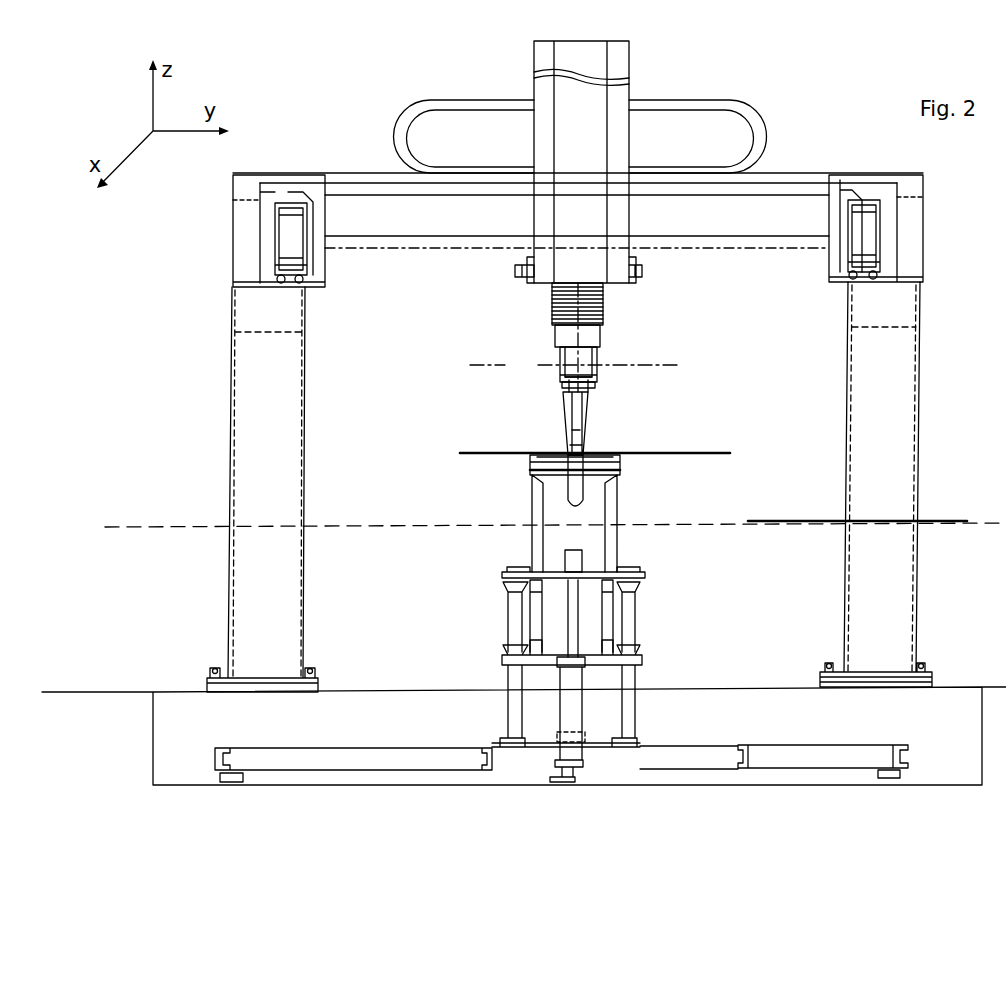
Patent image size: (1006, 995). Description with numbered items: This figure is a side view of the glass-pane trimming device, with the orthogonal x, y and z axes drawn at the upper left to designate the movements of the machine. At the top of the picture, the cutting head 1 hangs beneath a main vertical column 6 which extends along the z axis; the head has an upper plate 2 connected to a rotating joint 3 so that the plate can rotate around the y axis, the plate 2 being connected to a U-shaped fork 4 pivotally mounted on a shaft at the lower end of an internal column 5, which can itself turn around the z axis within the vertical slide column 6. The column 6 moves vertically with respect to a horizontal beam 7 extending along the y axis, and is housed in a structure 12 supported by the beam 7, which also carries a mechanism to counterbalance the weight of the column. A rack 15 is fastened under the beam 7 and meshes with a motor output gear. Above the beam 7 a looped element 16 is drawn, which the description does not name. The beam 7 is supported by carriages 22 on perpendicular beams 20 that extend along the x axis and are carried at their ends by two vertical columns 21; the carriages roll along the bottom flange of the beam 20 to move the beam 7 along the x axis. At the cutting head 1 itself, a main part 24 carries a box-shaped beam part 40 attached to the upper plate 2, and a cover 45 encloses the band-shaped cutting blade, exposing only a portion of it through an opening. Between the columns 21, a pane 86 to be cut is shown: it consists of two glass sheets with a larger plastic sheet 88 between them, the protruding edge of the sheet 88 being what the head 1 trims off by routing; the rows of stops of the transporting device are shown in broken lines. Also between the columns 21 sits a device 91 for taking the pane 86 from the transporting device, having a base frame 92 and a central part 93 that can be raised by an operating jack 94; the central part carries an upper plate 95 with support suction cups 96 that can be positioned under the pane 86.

The cutting head 1 is at (604, 428).
The upper plate 2 is at (597, 389).
The rotating joint 3 is at (603, 363).
The U-shaped fork 4 is at (574, 337).
The internal column 5 is at (585, 367).
The main vertical column 6 is at (600, 334).
The horizontal beam 7 is at (795, 166).
The structure 12 is at (636, 44).
The rack 15 is at (745, 252).
The cable carrier 16 is at (338, 156).
The beam 20 is at (228, 235).
The vertical columns 21 is at (224, 422).
The carriages 22 is at (326, 270).
The main part 24 is at (596, 442).
The beam part 40 is at (587, 411).
The cover 45 is at (565, 411).
The panes 86 is at (666, 444).
The sheet 88 is at (460, 453).
The device 91 is at (496, 612).
The base frame 92 is at (496, 655).
The central part 93 is at (624, 493).
The operating jack 94 is at (565, 718).
The upper plate 95 is at (532, 466).
The support suction cups 96 is at (530, 459).